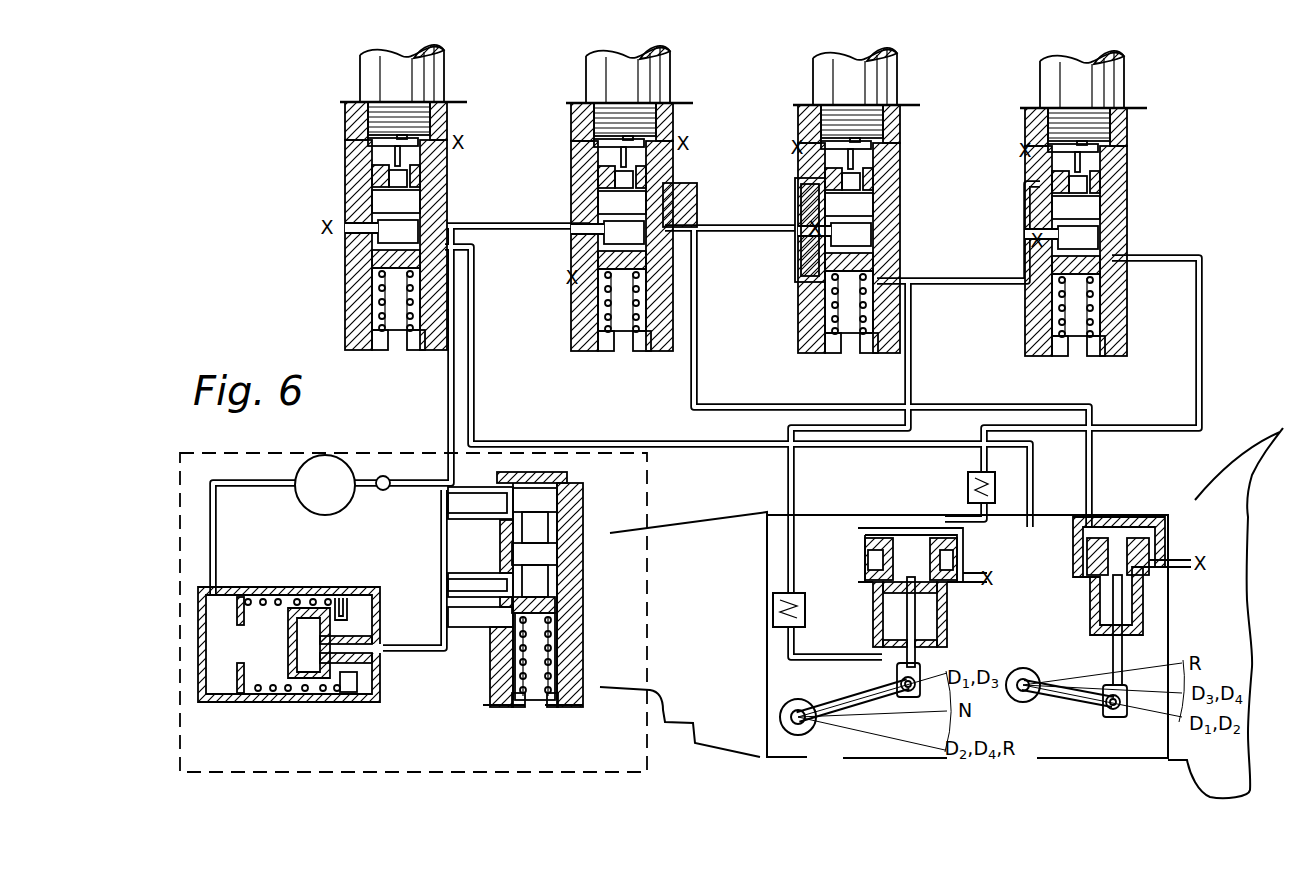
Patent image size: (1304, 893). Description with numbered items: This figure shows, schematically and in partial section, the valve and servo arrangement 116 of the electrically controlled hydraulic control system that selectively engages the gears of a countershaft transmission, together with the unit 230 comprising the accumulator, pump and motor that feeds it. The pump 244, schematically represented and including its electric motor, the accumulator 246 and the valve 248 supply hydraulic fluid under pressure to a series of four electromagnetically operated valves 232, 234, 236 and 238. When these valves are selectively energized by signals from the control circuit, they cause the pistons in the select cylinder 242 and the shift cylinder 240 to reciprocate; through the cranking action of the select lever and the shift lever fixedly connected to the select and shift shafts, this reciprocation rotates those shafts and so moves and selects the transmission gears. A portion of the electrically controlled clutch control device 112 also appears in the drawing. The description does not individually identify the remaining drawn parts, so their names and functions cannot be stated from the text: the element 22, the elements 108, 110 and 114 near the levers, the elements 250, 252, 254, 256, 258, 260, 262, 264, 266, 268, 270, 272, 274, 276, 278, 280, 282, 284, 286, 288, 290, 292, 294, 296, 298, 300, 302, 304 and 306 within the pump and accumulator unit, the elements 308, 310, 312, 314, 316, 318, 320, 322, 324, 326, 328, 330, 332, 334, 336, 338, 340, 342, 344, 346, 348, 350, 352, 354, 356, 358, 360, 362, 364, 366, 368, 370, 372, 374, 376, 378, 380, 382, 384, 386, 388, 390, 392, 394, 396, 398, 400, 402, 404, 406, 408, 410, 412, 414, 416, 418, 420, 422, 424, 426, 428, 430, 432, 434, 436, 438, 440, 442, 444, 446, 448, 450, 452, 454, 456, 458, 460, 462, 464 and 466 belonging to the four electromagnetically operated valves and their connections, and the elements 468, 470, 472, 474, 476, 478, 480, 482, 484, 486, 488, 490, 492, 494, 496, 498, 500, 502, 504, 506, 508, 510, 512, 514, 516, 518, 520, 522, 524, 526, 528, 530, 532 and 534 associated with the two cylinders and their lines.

The transmission housing 22 is at (765, 511).
The shift lever 108 is at (1075, 718).
The shift lever 110 is at (822, 730).
The electrically controlled clutch control device 112 is at (1112, 666).
The actuator rod 114 is at (880, 670).
The valve and servo arrangement 116 is at (1217, 380).
The accumulator, pump and motor 230 is at (655, 742).
The electromagnetically operated valve 232 is at (356, 80).
The electromagnetically operated valve 234 is at (690, 86).
The electromagnetically operated valve 236 is at (806, 84).
The electromagnetically operated valve 238 is at (1138, 93).
The shift cylinder 240 is at (1112, 599).
The select cylinder 242 is at (897, 580).
The pump 244 is at (320, 516).
The accumulator 246 is at (426, 700).
The valve 248 is at (542, 610).
The check valve 250 is at (380, 492).
The supply line 252 is at (448, 410).
The regulator body 254 is at (309, 647).
The stop 256 is at (240, 595).
The spring 258 is at (380, 596).
The outlet line 260 is at (400, 644).
The regulator outlet 262 is at (380, 676).
The regulator spool 264 is at (290, 640).
The stop block 266 is at (347, 697).
The regulator housing 268 is at (216, 702).
The housing wall 270 is at (372, 702).
The spring seat 272 is at (345, 596).
The pump inlet line 274 is at (218, 515).
The stop 276 is at (250, 700).
The spring 278 is at (300, 700).
The leg 280 is at (508, 708).
The leg 282 is at (582, 708).
The valve stem 284 is at (570, 562).
The valve body top 286 is at (522, 480).
The inlet port 288 is at (480, 503).
The return port 290 is at (500, 614).
The drain port 292 is at (480, 575).
The body wall 294 is at (505, 640).
The valve land 296 is at (560, 500).
The valve land 298 is at (534, 554).
The spring chamber 300 is at (560, 622).
The stem 302 is at (565, 522).
The seal plug 304 is at (560, 598).
The spring 306 is at (545, 692).
The valve body 308 is at (350, 352).
The leg 310 is at (380, 352).
The body wall 312 is at (352, 135).
The valve seat 314 is at (375, 175).
The valve plate 316 is at (370, 150).
The valve seat 318 is at (372, 188).
The seal plug 320 is at (372, 258).
The spring chamber wall 322 is at (370, 280).
The spool shoulder 324 is at (355, 242).
The chamber 326 is at (455, 160).
The passage 328 is at (440, 180).
The spool land 330 is at (370, 205).
The spool land 332 is at (384, 211).
The wall 334 is at (365, 300).
The spool land 336 is at (397, 233).
The bore 338 is at (446, 200).
The spring 340 is at (410, 342).
The adjusting plug 342 is at (452, 104).
The threads 344 is at (455, 125).
The valve body 346 is at (600, 356).
The spring 348 is at (625, 352).
The valve plate 350 is at (600, 146).
The passage 352 is at (665, 176).
The chamber 354 is at (680, 150).
The bore 356 is at (697, 216).
The spool shoulder 358 is at (588, 238).
The port 360 is at (680, 246).
The seal plug 362 is at (662, 272).
The spring chamber 364 is at (662, 302).
The threads 366 is at (680, 132).
The connecting line 368 is at (560, 226).
The connecting line 370 is at (800, 251).
The body wall 372 is at (695, 196).
The spool land 374 is at (590, 194).
The spool land 376 is at (617, 214).
The wall 378 is at (586, 300).
The spool land 380 is at (625, 237).
The valve seat 382 is at (600, 173).
The line 384 is at (656, 360).
The adjusting plug 386 is at (580, 106).
The body wall 388 is at (600, 112).
The valve body 390 is at (810, 356).
The spring 392 is at (840, 352).
The chamber 394 is at (880, 166).
The passage 396 is at (890, 201).
The passage 398 is at (885, 186).
The valve plate 400 is at (825, 170).
The port 402 is at (890, 241).
The wall 404 is at (810, 310).
The seal plug 406 is at (900, 320).
The passage 408 is at (805, 271).
The body wall 410 is at (815, 132).
The valve seat 412 is at (815, 190).
The passage 414 is at (820, 213).
The spool land 416 is at (839, 244).
The spring chamber wall 418 is at (810, 331).
The spool land 420 is at (852, 260).
The bore 422 is at (890, 221).
The leg 424 is at (875, 356).
The adjusting plug 426 is at (800, 116).
The threads 428 is at (890, 150).
The valve body 430 is at (1062, 357).
The spring 432 is at (1096, 352).
The passage 434 is at (1110, 173).
The passage 436 is at (1115, 189).
The chamber 438 is at (1115, 156).
The bore 440 is at (1116, 221).
The port 442 is at (1122, 268).
The seal plug 444 is at (1117, 296).
The passage 446 is at (1122, 241).
The body wall 448 is at (1045, 136).
The connecting line 450 is at (970, 283).
The connecting line 452 is at (1035, 182).
The spool land 454 is at (1065, 224).
The spring chamber 456 is at (1112, 316).
The spool land 458 is at (1078, 240).
The bore 460 is at (1116, 205).
The spring 462 is at (1082, 303).
The adjusting plug 464 is at (1030, 116).
The threads 466 is at (1132, 131).
The cylinder port 468 is at (1080, 527).
The cylinder wall 470 is at (1078, 556).
The cylinder wall 472 is at (1090, 615).
The cylinder head 474 is at (1152, 527).
The cylinder bottom 476 is at (1142, 634).
The piston 478 is at (1086, 582).
The piston chamber 480 is at (1162, 556).
The cylinder body 482 is at (1162, 486).
The piston rod chamber 484 is at (1148, 613).
The cylinder port 486 is at (1112, 528).
The piston 488 is at (1168, 538).
The rod seal 490 is at (1126, 640).
The connecting line 492 is at (985, 405).
The connecting line 494 is at (680, 448).
The vent 496 is at (1180, 571).
The lever pivot 498 is at (1023, 704).
The connecting line 500 is at (796, 492).
The cylinder wall 502 is at (876, 634).
The cylinder body 504 is at (857, 555).
The cylinder bottom 506 is at (946, 649).
The piston 508 is at (905, 530).
The piston chamber 510 is at (870, 584).
The piston seal 512 is at (883, 592).
The cylinder head 514 is at (860, 527).
The piston chamber 516 is at (968, 568).
The cylinder port 518 is at (940, 522).
The cylinder wall 520 is at (946, 622).
The piston 522 is at (966, 550).
The connecting line 524 is at (912, 385).
The restrictor 526 is at (772, 615).
The connecting line 528 is at (1128, 427).
The restrictor 530 is at (967, 484).
The vent 532 is at (966, 600).
The lever pivot 534 is at (800, 705).